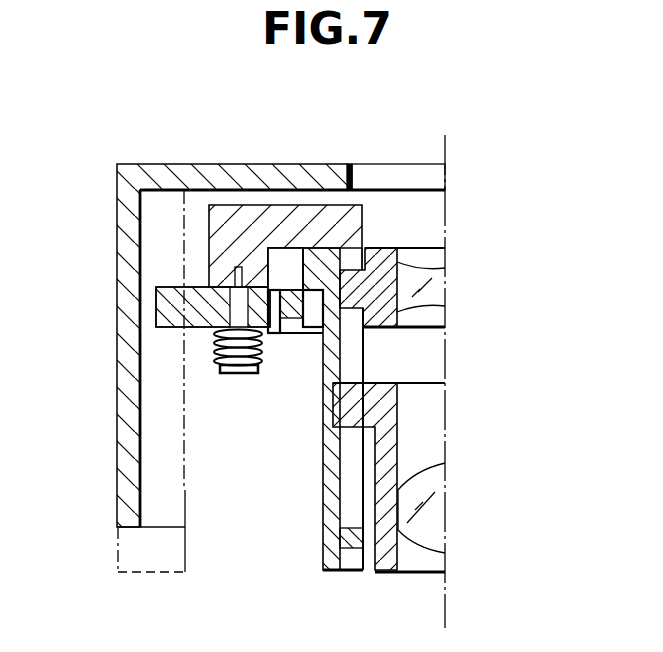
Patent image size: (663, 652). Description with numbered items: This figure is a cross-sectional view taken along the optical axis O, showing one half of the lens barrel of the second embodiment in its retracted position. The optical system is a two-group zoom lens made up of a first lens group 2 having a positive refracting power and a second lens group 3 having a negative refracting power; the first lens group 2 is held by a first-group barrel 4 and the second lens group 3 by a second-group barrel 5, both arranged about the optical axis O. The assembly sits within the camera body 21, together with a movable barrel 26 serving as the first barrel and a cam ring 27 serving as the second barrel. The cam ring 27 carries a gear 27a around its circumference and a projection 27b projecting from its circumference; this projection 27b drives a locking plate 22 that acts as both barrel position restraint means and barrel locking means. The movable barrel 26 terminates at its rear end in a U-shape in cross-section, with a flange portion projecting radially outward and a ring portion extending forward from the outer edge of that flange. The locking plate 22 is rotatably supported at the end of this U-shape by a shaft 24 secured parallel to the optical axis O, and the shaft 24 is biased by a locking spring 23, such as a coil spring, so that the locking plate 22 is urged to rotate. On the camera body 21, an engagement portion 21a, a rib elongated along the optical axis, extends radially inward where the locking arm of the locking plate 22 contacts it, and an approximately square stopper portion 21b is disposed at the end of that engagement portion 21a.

The camera body 21 is at (170, 173).
The engagement portion 21a is at (160, 465).
The stopper portion 21b is at (156, 550).
The locking plate 22 is at (180, 303).
The locking spring 23 is at (263, 360).
The shaft 24 is at (240, 377).
The movable barrel 26 is at (332, 220).
The cam ring 27 is at (348, 555).
The gear 27a is at (298, 255).
The projection 27b is at (305, 338).
The second-group barrel 5 is at (378, 262).
The second lens group 3 is at (437, 282).
The first-group barrel 4 is at (388, 441).
The first lens group 2 is at (437, 518).
The optical axis O is at (445, 613).